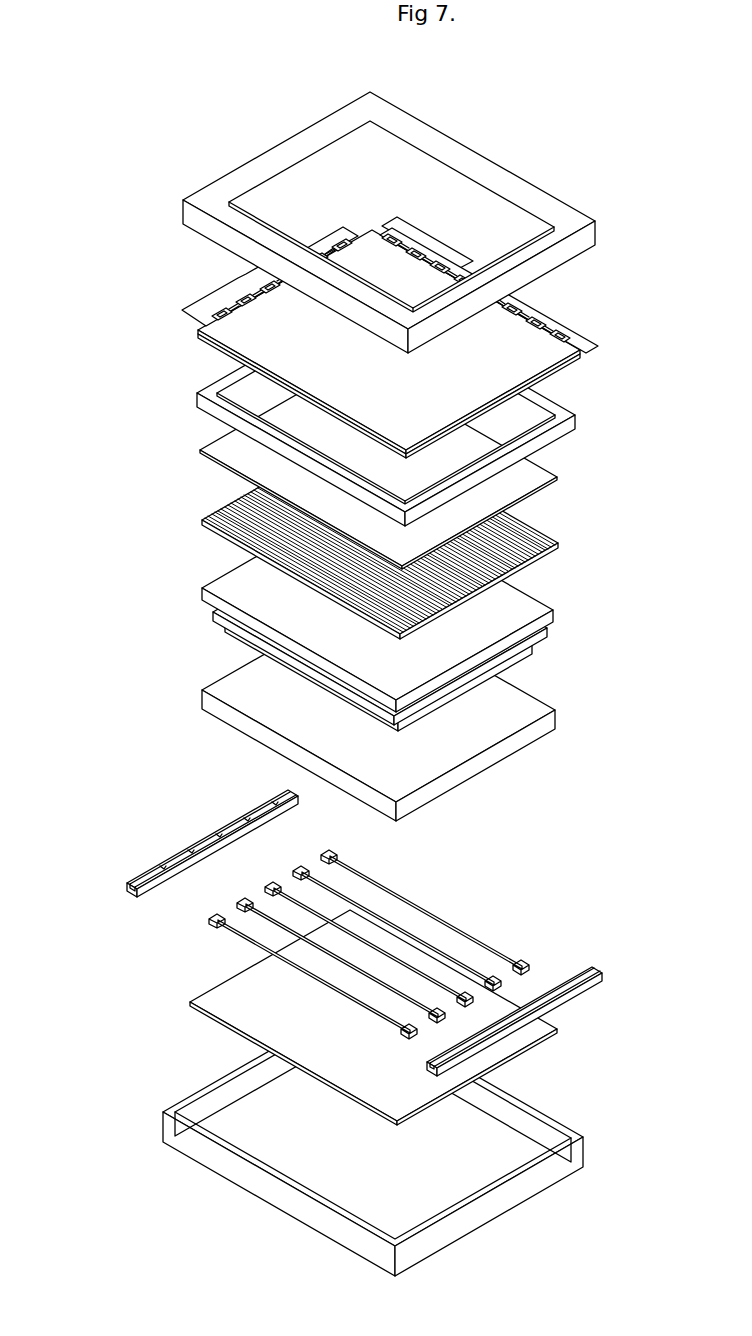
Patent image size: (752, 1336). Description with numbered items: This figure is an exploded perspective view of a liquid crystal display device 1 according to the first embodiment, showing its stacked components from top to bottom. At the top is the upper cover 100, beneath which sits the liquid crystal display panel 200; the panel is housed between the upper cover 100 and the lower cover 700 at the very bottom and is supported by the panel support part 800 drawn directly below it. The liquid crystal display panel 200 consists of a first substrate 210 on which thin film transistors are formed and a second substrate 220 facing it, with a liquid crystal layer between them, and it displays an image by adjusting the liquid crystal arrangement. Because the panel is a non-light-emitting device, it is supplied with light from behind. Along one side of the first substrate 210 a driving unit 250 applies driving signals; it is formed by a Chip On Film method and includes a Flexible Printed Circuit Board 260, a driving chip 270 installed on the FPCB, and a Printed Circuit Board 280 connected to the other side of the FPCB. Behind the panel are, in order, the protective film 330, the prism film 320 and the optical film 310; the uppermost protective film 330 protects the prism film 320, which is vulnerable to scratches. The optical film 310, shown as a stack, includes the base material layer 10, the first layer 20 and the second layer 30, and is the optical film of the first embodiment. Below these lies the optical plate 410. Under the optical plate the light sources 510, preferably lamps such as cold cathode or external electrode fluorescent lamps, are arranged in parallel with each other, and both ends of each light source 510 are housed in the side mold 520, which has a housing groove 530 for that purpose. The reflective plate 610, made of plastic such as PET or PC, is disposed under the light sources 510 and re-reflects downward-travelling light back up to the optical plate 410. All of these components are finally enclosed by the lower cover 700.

The liquid crystal display device 1 is at (242, 140).
The upper cover 100 is at (596, 232).
The liquid crystal display panel 200 is at (444, 344).
The first substrate 210 is at (581, 350).
The second substrate 220 is at (563, 360).
The driving unit 250 is at (338, 288).
The Flexible Printed Circuit Board (FPCB) 260 is at (217, 307).
The driving chip 270 is at (222, 328).
The Printed Circuit Board (PCB) 280 is at (217, 293).
The panel support part 800 is at (200, 402).
The protective film 330 is at (551, 472).
The prism film 320 is at (548, 530).
The optical film 310 is at (435, 614).
The base material layer 10 is at (622, 674).
The first layer 20 is at (548, 632).
The second layer 30 is at (535, 651).
The optical plate 410 is at (532, 737).
The light source 510 is at (435, 913).
The side mold 520 is at (212, 876).
The housing groove 530 is at (162, 890).
The reflective plate 610 is at (520, 1045).
The lower cover 700 is at (578, 1152).